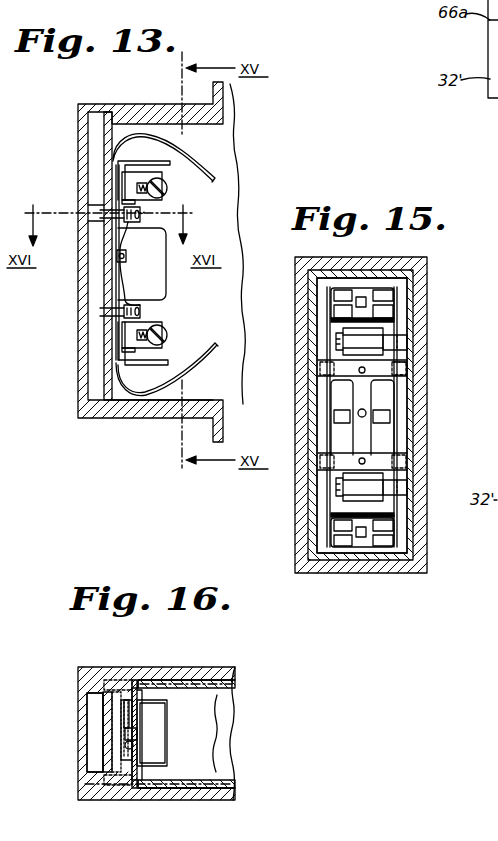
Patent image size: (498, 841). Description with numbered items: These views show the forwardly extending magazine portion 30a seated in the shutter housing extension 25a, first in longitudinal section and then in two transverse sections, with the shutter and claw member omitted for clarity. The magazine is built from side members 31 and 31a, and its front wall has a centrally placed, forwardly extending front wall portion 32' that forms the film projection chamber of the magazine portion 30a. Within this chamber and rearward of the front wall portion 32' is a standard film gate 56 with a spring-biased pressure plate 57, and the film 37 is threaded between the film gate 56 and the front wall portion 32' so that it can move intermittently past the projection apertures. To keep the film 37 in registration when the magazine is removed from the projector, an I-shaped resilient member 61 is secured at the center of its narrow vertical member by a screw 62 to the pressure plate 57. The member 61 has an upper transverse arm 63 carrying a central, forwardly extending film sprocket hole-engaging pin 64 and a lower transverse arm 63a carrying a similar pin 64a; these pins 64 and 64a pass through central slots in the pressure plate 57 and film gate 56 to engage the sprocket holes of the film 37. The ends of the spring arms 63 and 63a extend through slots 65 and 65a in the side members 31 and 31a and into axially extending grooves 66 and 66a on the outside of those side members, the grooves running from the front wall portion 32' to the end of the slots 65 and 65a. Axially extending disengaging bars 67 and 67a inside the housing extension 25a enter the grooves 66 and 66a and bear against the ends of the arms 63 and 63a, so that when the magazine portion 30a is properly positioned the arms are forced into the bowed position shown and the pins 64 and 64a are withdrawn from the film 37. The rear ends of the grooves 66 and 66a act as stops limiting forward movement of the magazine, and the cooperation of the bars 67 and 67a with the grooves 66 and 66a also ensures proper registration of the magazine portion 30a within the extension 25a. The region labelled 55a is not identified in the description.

In FIG. 13, the housing extension 25a is at (80, 374).
In FIG. 15, the housing extension 25a is at (302, 553).
In FIG. 16, the housing extension 25a is at (88, 795).
In FIG. 13, the forward magazine portion 30a is at (128, 404).
In FIG. 15, the forward magazine portion 30a is at (312, 513).
In FIG. 16, the forward magazine portion 30a is at (194, 785).
In FIG. 15, the side member 31 is at (312, 406).
In FIG. 16, the side member 31 is at (221, 782).
In FIG. 15, the side member 31a is at (412, 415).
In FIG. 16, the side member 31a is at (206, 671).
In FIG. 13, the front wall portion 32' is at (76, 256).
In FIG. 16, the front wall portion 32' is at (79, 732).
In FIG. 13, the film 37 is at (192, 367).
In FIG. 15, the film 37 is at (364, 297).
In FIG. 13, the switch housing 55a is at (165, 239).
In FIG. 13, the film gate 56 is at (152, 160).
In FIG. 16, the film gate 56 is at (127, 700).
In FIG. 13, the pressure plate 57 is at (128, 182).
In FIG. 16, the pressure plate 57 is at (131, 703).
In FIG. 13, the resilient member 61 is at (135, 283).
In FIG. 15, the resilient member 61 is at (366, 404).
In FIG. 13, the screw 62 is at (127, 257).
In FIG. 15, the screw 62 is at (359, 417).
In FIG. 13, the upper transverse arm 63 is at (141, 215).
In FIG. 15, the upper transverse arm 63 is at (395, 363).
In FIG. 16, the upper transverse arm 63 is at (141, 713).
In FIG. 13, the lower transverse arm 63a is at (141, 316).
In FIG. 15, the lower transverse arm 63a is at (388, 462).
In FIG. 13, the film sprocket hole-engaging pin 64 is at (124, 213).
In FIG. 15, the film sprocket hole-engaging pin 64 is at (366, 371).
In FIG. 16, the film sprocket hole-engaging pin 64 is at (133, 751).
In FIG. 13, the film sprocket hole-engaging pin 64a is at (124, 310).
In FIG. 15, the film sprocket hole-engaging pin 64a is at (366, 459).
In FIG. 15, the slot 65 is at (307, 345).
In FIG. 16, the slot 65 is at (148, 790).
In FIG. 13, the slot 65a is at (143, 212).
In FIG. 15, the slot 65a is at (412, 376).
In FIG. 16, the slot 65a is at (147, 684).
In FIG. 16, the groove 66 is at (90, 789).
In FIG. 16, the groove 66a is at (100, 664).
In FIG. 16, the disengaging bar 67 is at (98, 772).
In FIG. 13, the disengaging bar 67a is at (96, 212).
In FIG. 16, the disengaging bar 67a is at (95, 700).